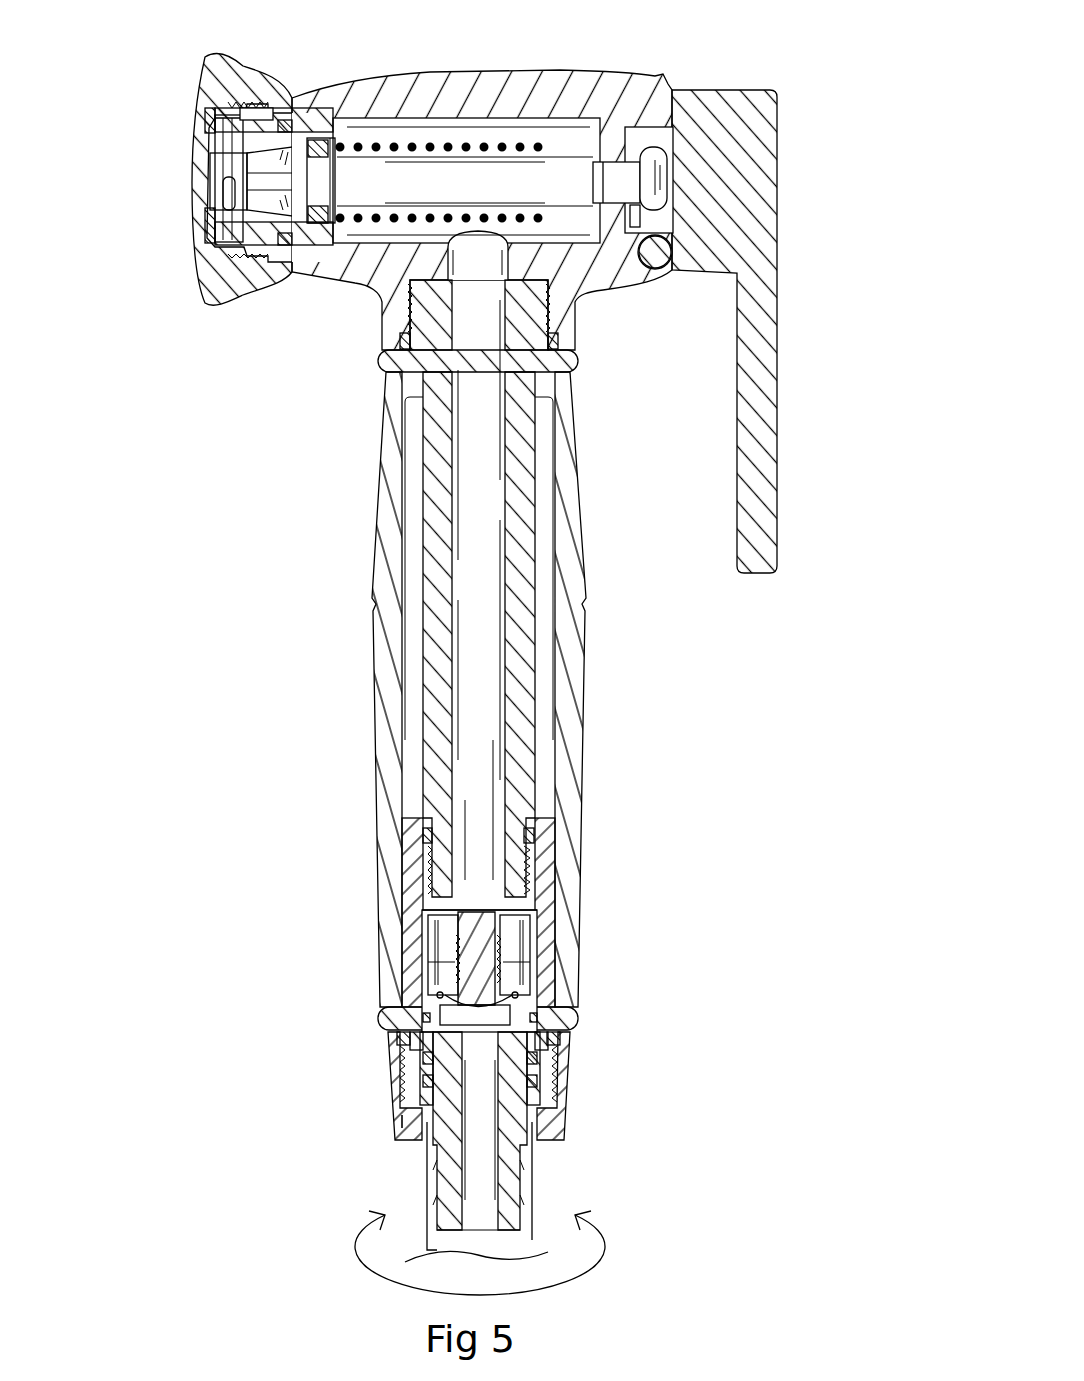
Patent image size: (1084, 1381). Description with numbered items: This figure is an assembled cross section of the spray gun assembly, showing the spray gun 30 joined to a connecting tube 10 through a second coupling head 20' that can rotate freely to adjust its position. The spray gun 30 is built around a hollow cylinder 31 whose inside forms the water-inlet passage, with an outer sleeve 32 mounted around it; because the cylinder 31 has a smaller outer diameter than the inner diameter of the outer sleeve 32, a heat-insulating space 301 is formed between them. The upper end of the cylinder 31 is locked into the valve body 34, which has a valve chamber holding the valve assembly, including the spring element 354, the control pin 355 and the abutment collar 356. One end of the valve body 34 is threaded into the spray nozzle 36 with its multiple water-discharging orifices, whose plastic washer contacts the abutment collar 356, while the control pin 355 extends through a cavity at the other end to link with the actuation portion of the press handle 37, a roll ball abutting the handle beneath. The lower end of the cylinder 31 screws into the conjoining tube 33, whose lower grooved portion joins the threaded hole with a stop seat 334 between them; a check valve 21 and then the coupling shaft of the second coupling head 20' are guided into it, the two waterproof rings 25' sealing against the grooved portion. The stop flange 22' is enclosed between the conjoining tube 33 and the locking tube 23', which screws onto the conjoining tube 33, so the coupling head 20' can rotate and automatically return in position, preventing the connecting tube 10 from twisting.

The connecting tube 10 is at (395, 1192).
The second coupling head 20' is at (442, 1227).
The check valve 21 is at (537, 953).
The stop flange 22' is at (431, 1131).
The locking tube 23' is at (528, 1086).
The waterproof ring 25' is at (546, 1066).
The spray gun 30 is at (296, 577).
The cylinder 31 is at (535, 773).
The heat-insulating space 301 is at (543, 737).
The outer sleeve 32 is at (587, 653).
The conjoining tube 33 is at (548, 920).
The stop seat 334 is at (425, 912).
The valve body 34 is at (500, 72).
The spring element 354 is at (428, 145).
The control pin 355 is at (657, 173).
The abutment collar 356 is at (313, 125).
The spray nozzle 36 is at (202, 96).
The press handle 37 is at (779, 405).